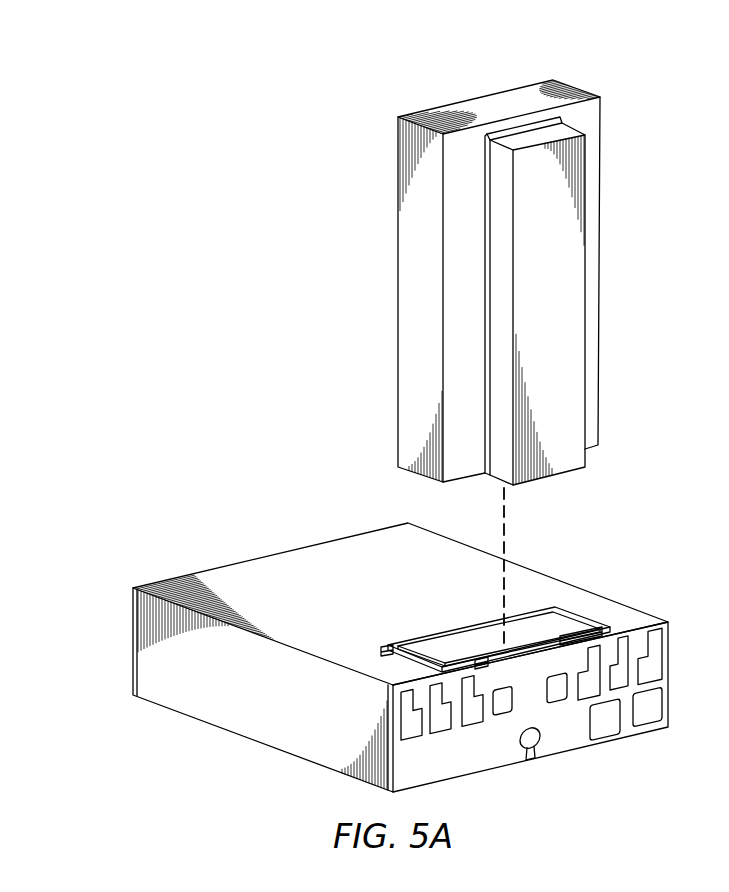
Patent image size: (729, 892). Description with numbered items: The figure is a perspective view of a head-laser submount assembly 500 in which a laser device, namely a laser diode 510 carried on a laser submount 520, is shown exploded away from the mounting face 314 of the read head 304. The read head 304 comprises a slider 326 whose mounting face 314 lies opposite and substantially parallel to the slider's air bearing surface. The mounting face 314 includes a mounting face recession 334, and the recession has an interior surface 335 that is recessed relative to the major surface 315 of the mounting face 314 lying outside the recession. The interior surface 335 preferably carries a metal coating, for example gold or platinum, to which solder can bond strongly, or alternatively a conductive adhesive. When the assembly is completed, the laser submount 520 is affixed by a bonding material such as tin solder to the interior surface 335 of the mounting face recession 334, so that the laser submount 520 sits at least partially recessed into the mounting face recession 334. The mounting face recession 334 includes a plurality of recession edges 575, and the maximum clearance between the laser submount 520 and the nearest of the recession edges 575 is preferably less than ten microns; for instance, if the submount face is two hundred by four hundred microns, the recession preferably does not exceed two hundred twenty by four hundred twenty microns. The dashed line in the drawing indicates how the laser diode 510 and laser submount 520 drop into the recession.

The head-laser submount assembly 500 is at (214, 101).
The laser submount 520 is at (407, 278).
The laser diode 510 is at (567, 325).
The read head 304 is at (437, 548).
The major surface 315 is at (367, 562).
The mounting face 314 is at (253, 578).
The slider 326 is at (220, 712).
The mounting face recession 334 is at (450, 657).
The interior surface 335 is at (532, 637).
The recession edges 575 is at (490, 622).